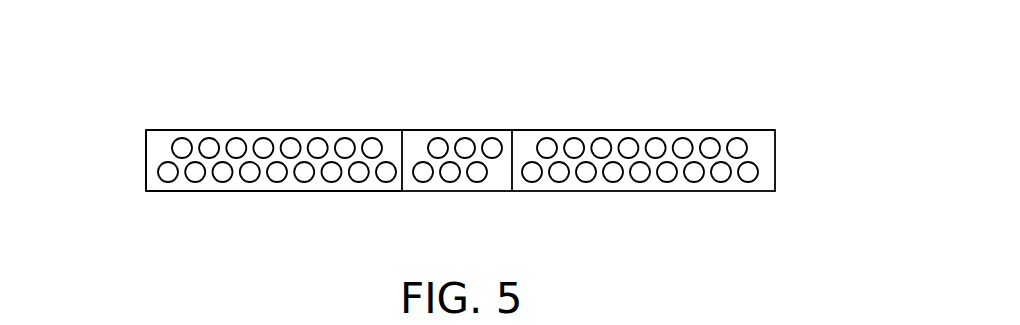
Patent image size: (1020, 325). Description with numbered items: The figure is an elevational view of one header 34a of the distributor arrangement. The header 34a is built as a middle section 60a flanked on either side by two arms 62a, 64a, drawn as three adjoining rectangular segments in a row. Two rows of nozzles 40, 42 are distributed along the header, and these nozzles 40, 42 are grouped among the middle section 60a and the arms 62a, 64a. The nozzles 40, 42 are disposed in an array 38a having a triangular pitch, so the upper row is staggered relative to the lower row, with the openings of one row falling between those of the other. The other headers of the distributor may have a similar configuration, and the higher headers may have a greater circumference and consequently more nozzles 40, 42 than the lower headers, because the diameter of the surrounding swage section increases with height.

The nozzle 40 is at (790, 144).
The array 38a is at (138, 147).
The nozzle 42 is at (125, 173).
The header 34a is at (448, 212).
The arm 62a is at (275, 129).
The middle section 60a is at (457, 129).
The arm 64a is at (645, 129).